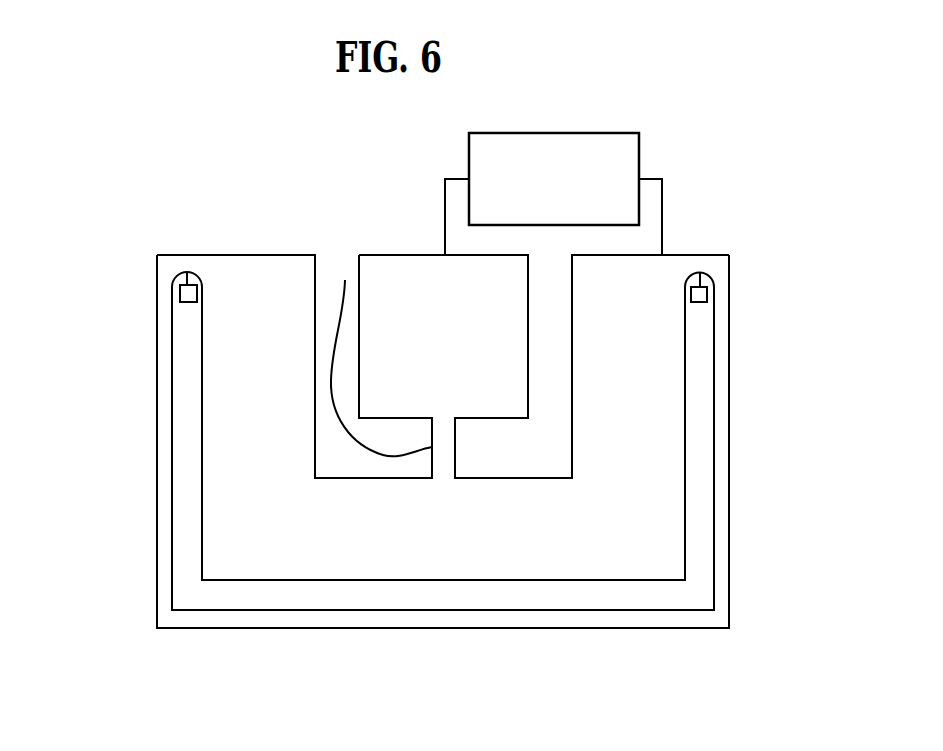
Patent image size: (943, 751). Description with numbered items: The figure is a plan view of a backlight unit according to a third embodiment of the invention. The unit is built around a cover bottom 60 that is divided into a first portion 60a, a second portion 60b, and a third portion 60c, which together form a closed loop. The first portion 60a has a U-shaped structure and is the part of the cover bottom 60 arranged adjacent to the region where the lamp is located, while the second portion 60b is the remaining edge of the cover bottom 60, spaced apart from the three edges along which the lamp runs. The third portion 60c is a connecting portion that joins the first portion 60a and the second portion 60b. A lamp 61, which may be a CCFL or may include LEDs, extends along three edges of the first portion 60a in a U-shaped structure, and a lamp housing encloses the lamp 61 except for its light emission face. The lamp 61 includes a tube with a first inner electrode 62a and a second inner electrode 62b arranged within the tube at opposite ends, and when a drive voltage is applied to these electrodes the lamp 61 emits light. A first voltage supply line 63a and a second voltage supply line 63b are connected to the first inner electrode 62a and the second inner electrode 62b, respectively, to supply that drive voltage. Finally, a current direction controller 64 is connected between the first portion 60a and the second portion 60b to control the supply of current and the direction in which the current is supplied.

The cover bottom 60 is at (443, 379).
The first portion 60a is at (262, 255).
The second portion 60b is at (398, 255).
The third portion 60c is at (403, 180).
The lamp 61 is at (700, 428).
The first inner electrode 62a is at (185, 290).
The second inner electrode 62b is at (707, 292).
The first voltage supply line 63a is at (187, 265).
The second voltage supply line 63b is at (702, 270).
The current direction controller 64 is at (607, 143).